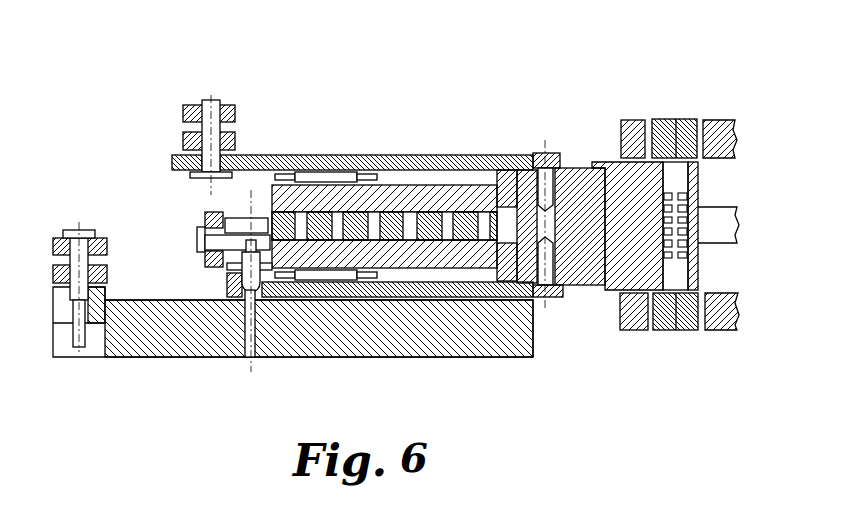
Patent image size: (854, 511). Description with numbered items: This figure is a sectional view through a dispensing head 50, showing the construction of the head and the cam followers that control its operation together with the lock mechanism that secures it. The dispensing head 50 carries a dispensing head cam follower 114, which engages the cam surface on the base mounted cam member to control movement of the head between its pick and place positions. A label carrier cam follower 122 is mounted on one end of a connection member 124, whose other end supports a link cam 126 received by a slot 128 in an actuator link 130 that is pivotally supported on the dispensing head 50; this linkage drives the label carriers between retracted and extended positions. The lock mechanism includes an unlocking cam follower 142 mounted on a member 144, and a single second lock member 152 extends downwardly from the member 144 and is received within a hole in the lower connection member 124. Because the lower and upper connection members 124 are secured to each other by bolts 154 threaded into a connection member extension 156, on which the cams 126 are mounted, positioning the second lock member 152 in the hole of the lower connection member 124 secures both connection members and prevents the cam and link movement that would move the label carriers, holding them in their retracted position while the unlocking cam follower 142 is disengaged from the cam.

The dispensing head 50 is at (354, 159).
The dispensing head cam follower 114 is at (52, 273).
The label carrier cam follower 122 is at (240, 140).
The connection member 124 is at (433, 273).
The link cam 126 is at (664, 130).
The slot 128 is at (645, 137).
The actuator link 130 is at (717, 130).
The unlocking cam follower 142 is at (212, 212).
The member 144 is at (245, 222).
The second lock member 152 is at (237, 285).
The bolts 154 is at (555, 188).
The connection member extension 156 is at (603, 255).